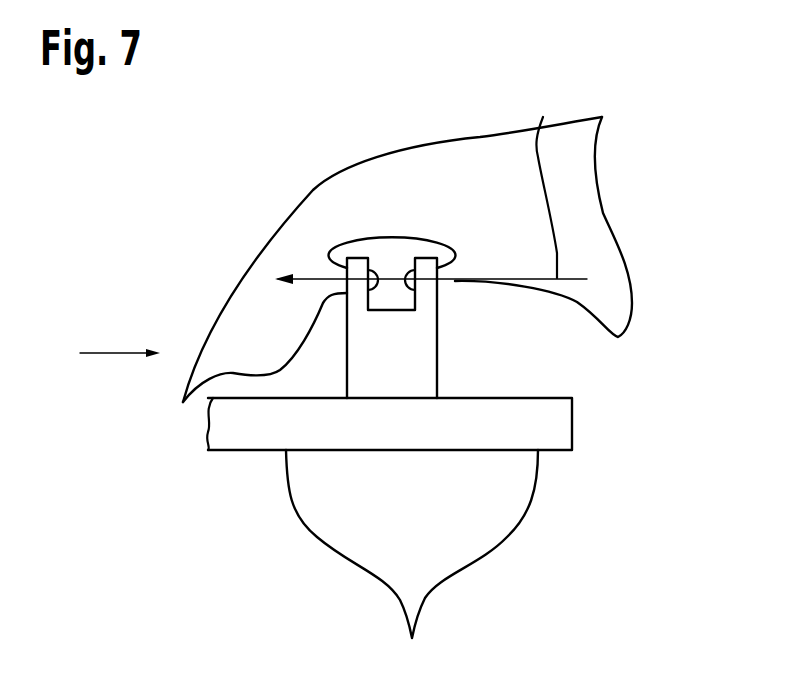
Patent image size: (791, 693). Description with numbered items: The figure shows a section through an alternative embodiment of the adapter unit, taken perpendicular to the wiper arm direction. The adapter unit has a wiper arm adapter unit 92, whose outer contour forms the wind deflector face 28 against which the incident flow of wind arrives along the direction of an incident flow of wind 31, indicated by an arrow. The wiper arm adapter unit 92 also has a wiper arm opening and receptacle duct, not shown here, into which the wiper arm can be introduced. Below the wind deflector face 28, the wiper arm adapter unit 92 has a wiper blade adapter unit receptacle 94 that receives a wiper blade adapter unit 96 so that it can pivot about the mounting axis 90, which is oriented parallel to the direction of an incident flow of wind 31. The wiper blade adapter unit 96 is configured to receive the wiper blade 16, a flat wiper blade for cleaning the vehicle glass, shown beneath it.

The wind deflector face 28 is at (377, 158).
The mounting axis 90 is at (543, 117).
The wiper arm adapter unit 92 is at (583, 170).
The wiper blade adapter unit receptacle 94 is at (455, 281).
The wiper blade adapter unit 96 is at (557, 430).
The wiper blade 16 is at (505, 527).
The direction of an incident flow of wind 31 is at (112, 350).